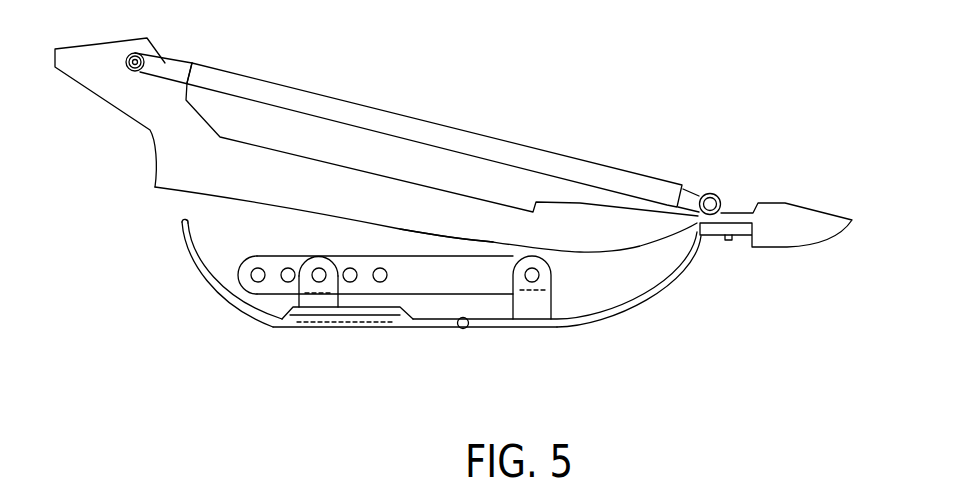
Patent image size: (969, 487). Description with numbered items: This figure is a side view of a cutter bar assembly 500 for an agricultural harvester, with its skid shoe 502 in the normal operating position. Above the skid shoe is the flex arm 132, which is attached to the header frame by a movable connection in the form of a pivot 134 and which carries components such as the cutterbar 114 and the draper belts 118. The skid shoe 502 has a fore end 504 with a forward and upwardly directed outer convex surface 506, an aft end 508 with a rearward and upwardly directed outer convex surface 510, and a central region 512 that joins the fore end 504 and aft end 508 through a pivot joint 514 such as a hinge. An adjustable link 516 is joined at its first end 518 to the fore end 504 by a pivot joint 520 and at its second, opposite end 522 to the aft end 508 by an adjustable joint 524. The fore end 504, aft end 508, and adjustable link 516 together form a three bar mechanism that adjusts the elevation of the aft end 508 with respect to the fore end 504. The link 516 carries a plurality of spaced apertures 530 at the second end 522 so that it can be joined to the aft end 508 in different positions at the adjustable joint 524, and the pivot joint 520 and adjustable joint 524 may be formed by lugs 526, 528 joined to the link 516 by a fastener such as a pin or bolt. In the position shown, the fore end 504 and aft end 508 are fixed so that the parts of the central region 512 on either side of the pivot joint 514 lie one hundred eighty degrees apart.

The cutterbar 114 is at (852, 220).
The draper belts 118 is at (261, 80).
The flex arm 132 is at (177, 135).
The pivot 134 is at (152, 40).
The cutter bar assembly 500 is at (657, 88).
The skid shoe 502 is at (203, 215).
The fore end 504 is at (595, 327).
The outer convex surface 506 is at (643, 297).
The aft end 508 is at (247, 330).
The outer convex surface 510 is at (205, 287).
The central region 512 is at (427, 338).
The pivot joint 514 is at (465, 328).
The adjustable link 516 is at (434, 260).
The first end 518 is at (490, 257).
The pivot joint 520 is at (543, 262).
The second end 522 is at (280, 255).
The adjustable joint 524 is at (308, 262).
The lug 526 is at (537, 312).
The lug 528 is at (322, 302).
The spaced apertures 530 is at (380, 270).